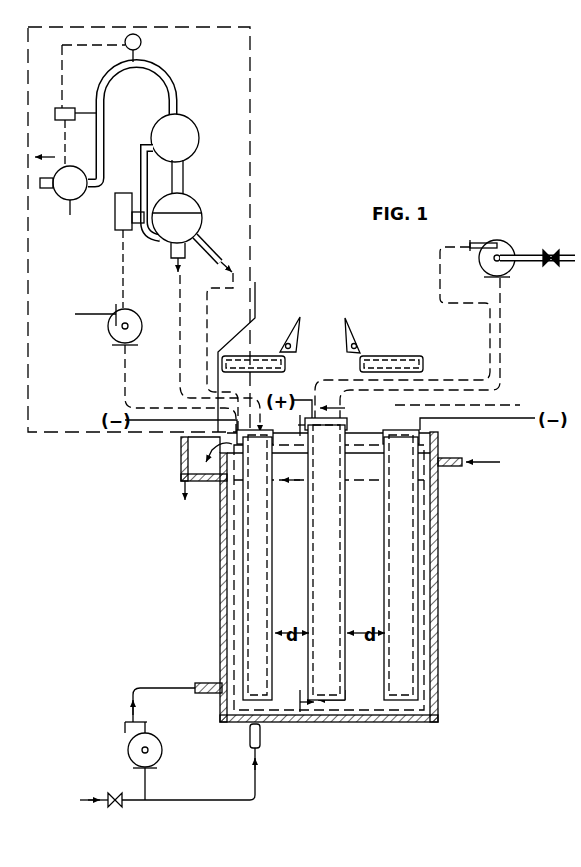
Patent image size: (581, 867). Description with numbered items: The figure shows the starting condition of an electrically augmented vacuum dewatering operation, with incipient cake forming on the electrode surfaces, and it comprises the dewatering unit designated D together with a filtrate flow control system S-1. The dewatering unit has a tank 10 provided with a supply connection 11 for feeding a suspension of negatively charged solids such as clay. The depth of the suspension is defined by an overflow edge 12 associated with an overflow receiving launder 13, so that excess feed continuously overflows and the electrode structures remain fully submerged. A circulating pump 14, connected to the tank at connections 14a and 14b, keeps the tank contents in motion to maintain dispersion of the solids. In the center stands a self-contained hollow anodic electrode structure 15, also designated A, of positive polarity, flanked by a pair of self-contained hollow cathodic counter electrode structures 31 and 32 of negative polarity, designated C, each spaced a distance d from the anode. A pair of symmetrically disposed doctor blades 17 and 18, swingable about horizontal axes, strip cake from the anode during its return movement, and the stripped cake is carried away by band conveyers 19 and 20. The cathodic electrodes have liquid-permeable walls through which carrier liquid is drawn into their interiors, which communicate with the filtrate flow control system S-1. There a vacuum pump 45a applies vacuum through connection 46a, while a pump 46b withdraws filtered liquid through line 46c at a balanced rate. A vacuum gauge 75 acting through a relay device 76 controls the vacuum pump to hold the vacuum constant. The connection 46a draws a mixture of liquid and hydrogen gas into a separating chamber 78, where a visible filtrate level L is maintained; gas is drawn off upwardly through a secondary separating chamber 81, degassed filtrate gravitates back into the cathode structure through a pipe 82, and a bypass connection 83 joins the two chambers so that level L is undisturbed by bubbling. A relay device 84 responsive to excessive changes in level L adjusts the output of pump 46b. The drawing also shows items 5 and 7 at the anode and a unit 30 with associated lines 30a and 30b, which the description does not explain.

The anode connector / spacer 5 is at (341, 560).
The cathode connector / spacer 7 is at (298, 567).
The tank 10 is at (440, 448).
The supply connection 11 is at (455, 459).
The overflow edge 12 is at (212, 449).
The overflow receiving launder 13 is at (182, 467).
The circulating pump 14 is at (160, 756).
The pump connection 14a is at (262, 738).
The pump connection 14b is at (196, 684).
The anodic electrode structure 15 is at (346, 574).
The doctor blade 17 is at (288, 335).
The doctor blade 18 is at (356, 332).
The band conveyer 19 is at (250, 362).
The band conveyer 20 is at (405, 362).
The metering pump 30 is at (495, 242).
The metering line 30a is at (490, 347).
The metering line 30b is at (502, 347).
The cathodic counter electrode structure 31 is at (272, 522).
The cathodic counter electrode structure 32 is at (384, 522).
The vacuum pump 45a is at (72, 248).
The connection pipe 46a is at (180, 380).
The filtrate pump 46b is at (135, 312).
The line 46c is at (124, 375).
The vacuum gauge 75 is at (141, 42).
The relay device 76 is at (60, 106).
The separating chamber 78 is at (203, 222).
The secondary separating chamber 81 is at (190, 130).
The pipe 82 is at (210, 250).
The bypass connection 83 is at (140, 168).
The relay device 84 is at (117, 217).
The filtrate flow control system S-1 is at (255, 155).